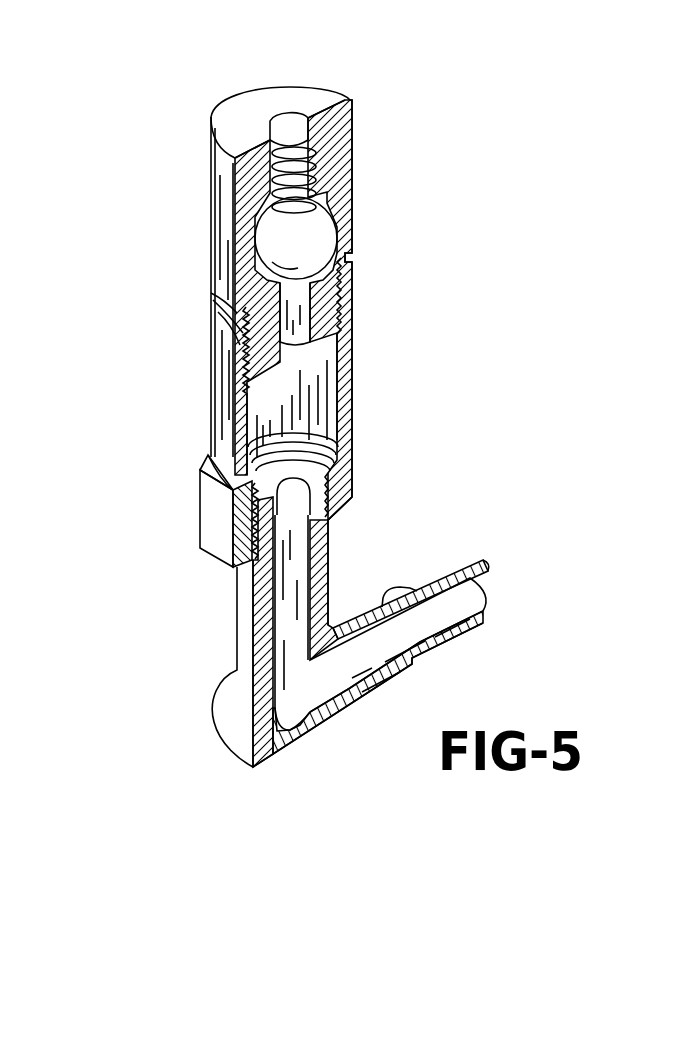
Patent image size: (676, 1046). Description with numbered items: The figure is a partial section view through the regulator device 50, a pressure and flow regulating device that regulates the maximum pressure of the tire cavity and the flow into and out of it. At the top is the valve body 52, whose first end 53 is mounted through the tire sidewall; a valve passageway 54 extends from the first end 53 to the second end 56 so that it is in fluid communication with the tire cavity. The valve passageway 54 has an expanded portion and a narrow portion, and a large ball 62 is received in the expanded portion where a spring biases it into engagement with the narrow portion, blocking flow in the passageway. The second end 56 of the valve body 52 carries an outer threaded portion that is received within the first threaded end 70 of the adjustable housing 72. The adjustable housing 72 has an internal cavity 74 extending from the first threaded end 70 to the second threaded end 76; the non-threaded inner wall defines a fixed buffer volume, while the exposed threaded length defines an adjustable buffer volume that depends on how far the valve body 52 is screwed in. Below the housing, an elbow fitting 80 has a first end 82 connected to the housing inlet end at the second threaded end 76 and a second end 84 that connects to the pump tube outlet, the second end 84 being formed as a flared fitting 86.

The regulator device 50 is at (460, 316).
The valve body 52 is at (223, 223).
The first end 53 is at (305, 90).
The valve passageway 54 is at (307, 167).
The second end 56 is at (326, 316).
The ball 62 is at (318, 232).
The first threaded end 70 is at (355, 291).
The adjustable housing 72 is at (198, 394).
The internal cavity 74 is at (312, 402).
The second threaded end 76 is at (354, 478).
The elbow fitting 80 is at (314, 746).
The first end 82 is at (272, 468).
The second end 84 is at (488, 612).
The flared fitting 86 is at (441, 581).